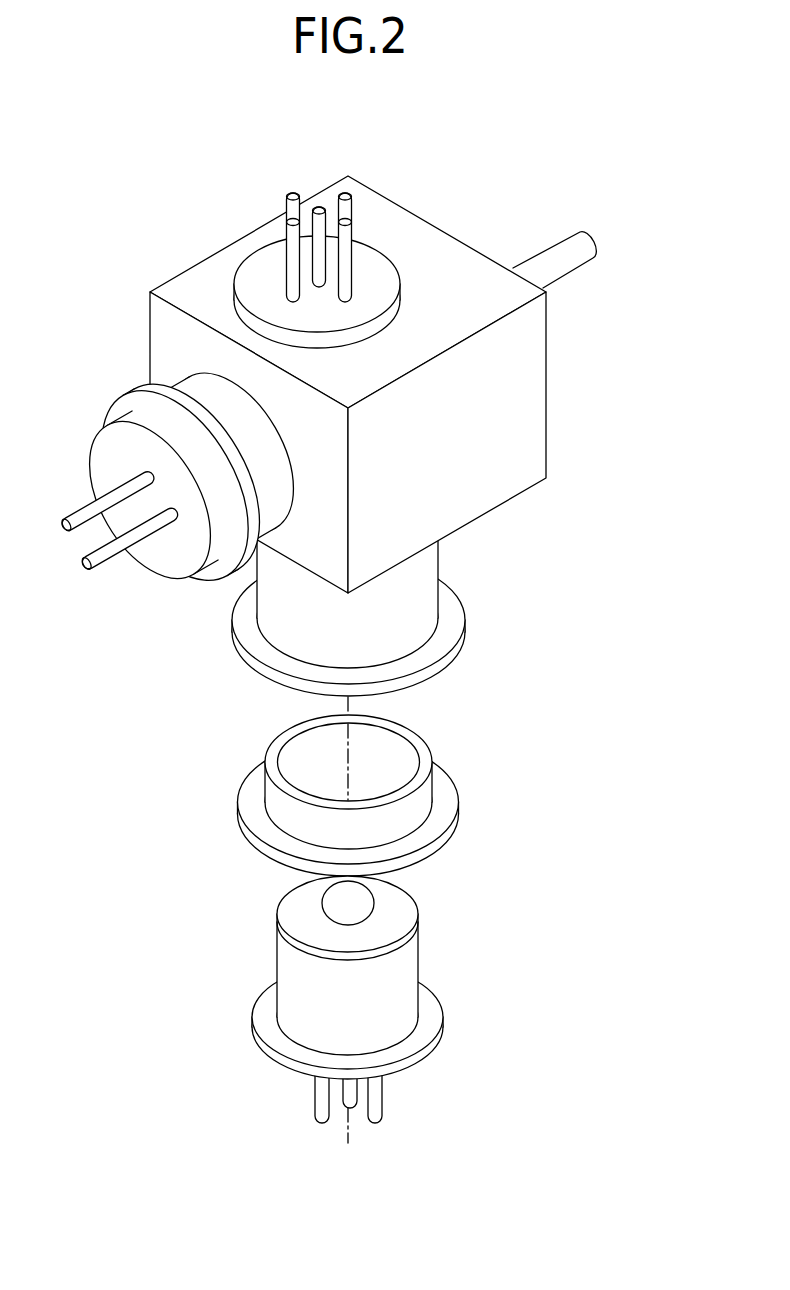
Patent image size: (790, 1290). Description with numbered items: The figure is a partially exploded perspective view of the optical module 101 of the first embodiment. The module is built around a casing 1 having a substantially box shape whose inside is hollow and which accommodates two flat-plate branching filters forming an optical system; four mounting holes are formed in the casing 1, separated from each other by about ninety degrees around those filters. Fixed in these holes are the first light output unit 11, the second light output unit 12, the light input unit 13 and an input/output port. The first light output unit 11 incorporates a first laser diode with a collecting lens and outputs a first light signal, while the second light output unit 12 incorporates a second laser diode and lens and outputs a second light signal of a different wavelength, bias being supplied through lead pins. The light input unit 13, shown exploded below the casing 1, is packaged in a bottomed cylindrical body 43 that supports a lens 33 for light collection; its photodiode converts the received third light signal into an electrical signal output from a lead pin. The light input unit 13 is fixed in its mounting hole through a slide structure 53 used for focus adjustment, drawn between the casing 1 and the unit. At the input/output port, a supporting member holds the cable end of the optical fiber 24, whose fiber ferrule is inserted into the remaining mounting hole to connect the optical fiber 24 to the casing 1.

The optical module 101 is at (608, 184).
The casing 1 is at (548, 427).
The first light output unit 11 is at (153, 578).
The second light output unit 12 is at (258, 249).
The optical fiber 24 is at (582, 248).
The slide structure 53 is at (458, 793).
The light input unit 13 is at (420, 999).
The lens 33 is at (363, 902).
The cylindrical body 43 is at (440, 1003).